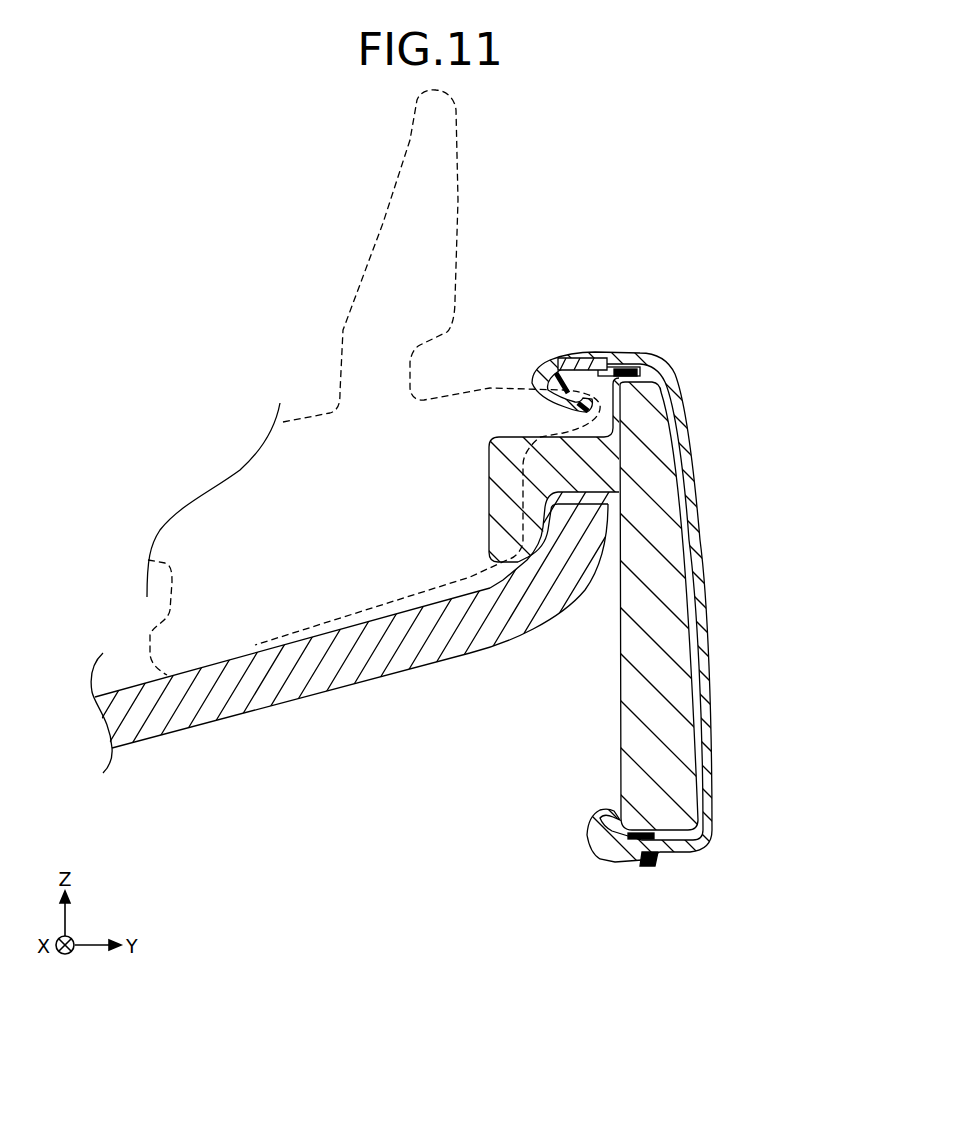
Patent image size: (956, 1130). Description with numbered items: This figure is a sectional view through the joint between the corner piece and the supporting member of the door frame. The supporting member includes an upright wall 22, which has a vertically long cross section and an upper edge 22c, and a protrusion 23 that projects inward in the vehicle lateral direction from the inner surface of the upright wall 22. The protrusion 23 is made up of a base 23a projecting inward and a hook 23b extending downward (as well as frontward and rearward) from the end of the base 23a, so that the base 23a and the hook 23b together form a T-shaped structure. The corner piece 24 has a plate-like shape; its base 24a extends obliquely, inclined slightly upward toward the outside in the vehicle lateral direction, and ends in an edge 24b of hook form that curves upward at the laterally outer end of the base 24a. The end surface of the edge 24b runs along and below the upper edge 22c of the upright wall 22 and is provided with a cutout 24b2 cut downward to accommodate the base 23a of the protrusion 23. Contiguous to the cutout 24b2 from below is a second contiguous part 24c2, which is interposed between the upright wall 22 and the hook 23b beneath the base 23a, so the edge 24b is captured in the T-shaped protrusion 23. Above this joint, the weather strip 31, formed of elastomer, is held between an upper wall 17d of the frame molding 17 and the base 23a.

The frame molding 17 is at (536, 588).
The upper wall 17d is at (593, 358).
The upright wall 22 is at (519, 588).
The upper edge 22c is at (651, 367).
The protrusion 23 is at (552, 518).
The base 23a is at (578, 456).
The hook 23b is at (515, 548).
The corner piece 24 is at (441, 621).
The base 24a is at (233, 700).
The edge 24b is at (654, 567).
The cutout 24b2 is at (584, 491).
The second contiguous part 24c2 is at (582, 523).
The weather strip 31 is at (386, 225).